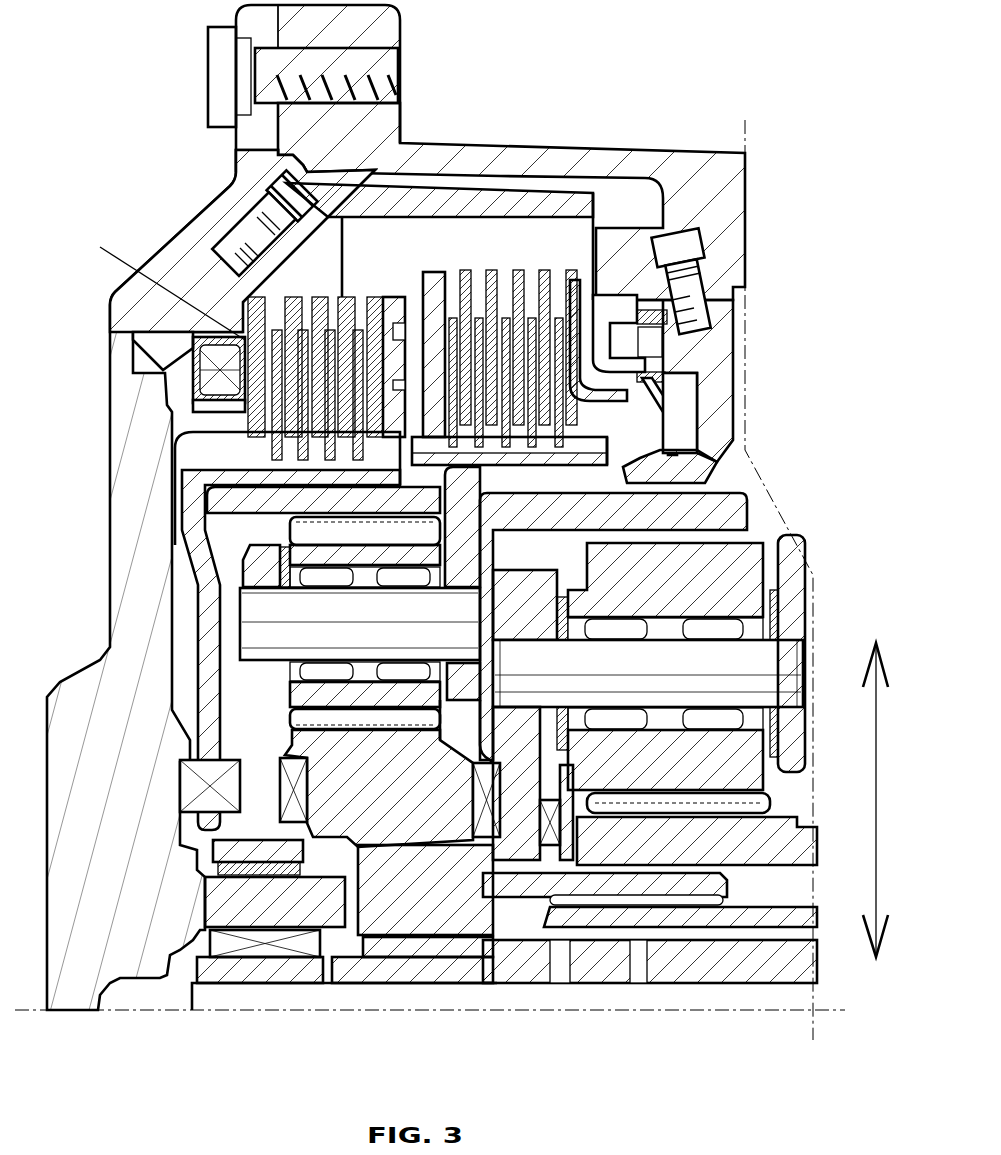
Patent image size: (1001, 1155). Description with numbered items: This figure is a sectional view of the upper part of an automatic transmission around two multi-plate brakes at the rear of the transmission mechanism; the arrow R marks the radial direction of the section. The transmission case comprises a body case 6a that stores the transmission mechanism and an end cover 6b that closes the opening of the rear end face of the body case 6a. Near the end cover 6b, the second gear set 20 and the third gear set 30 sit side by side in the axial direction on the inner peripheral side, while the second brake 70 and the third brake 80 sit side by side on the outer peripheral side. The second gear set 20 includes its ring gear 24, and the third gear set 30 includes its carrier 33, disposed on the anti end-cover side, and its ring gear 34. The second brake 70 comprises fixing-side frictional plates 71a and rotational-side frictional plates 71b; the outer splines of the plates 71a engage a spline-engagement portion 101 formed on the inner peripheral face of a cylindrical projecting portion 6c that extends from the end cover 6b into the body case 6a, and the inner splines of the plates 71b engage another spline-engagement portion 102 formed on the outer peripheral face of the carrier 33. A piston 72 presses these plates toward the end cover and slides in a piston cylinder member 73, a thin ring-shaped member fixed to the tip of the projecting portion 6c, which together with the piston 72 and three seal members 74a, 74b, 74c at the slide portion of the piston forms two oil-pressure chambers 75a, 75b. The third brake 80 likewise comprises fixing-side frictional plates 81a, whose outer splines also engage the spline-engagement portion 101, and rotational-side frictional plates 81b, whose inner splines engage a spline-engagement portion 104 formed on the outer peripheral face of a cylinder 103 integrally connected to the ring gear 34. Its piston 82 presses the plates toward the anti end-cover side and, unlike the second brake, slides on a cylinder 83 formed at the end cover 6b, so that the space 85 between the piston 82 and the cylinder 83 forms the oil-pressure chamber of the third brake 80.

The body case 6a is at (497, 150).
The end cover 6b is at (175, 233).
The cylindrical projecting portion 6c is at (593, 193).
The second gear set 20 is at (763, 527).
The ring gear 24 is at (557, 531).
The third gear set 30 is at (190, 632).
The carrier 33 is at (480, 537).
The ring gear 34 is at (272, 513).
The second brake 70 is at (532, 233).
The fixing-side frictional plates 71a is at (487, 270).
The rotational-side frictional plates 71b is at (550, 453).
The piston 72 is at (652, 406).
The piston cylinder member 73 is at (710, 297).
The seal member 74a is at (619, 333).
The seal member 74b is at (655, 376).
The seal member 74c is at (677, 457).
The oil-pressure chamber 75a is at (645, 342).
The oil-pressure chamber 75b is at (690, 405).
The third brake 80 is at (240, 330).
The fixing-side frictional plates 81a is at (330, 302).
The rotational-side frictional plates 81b is at (267, 453).
The piston 82 is at (195, 358).
The cylinder 83 is at (200, 405).
The space 85 is at (160, 357).
The spline-engagement portion 101 is at (409, 270).
The spline-engagement portion 102 is at (592, 443).
The cylinder 103 is at (157, 575).
The spline-engagement portion 104 is at (403, 464).
The radial direction R is at (877, 787).